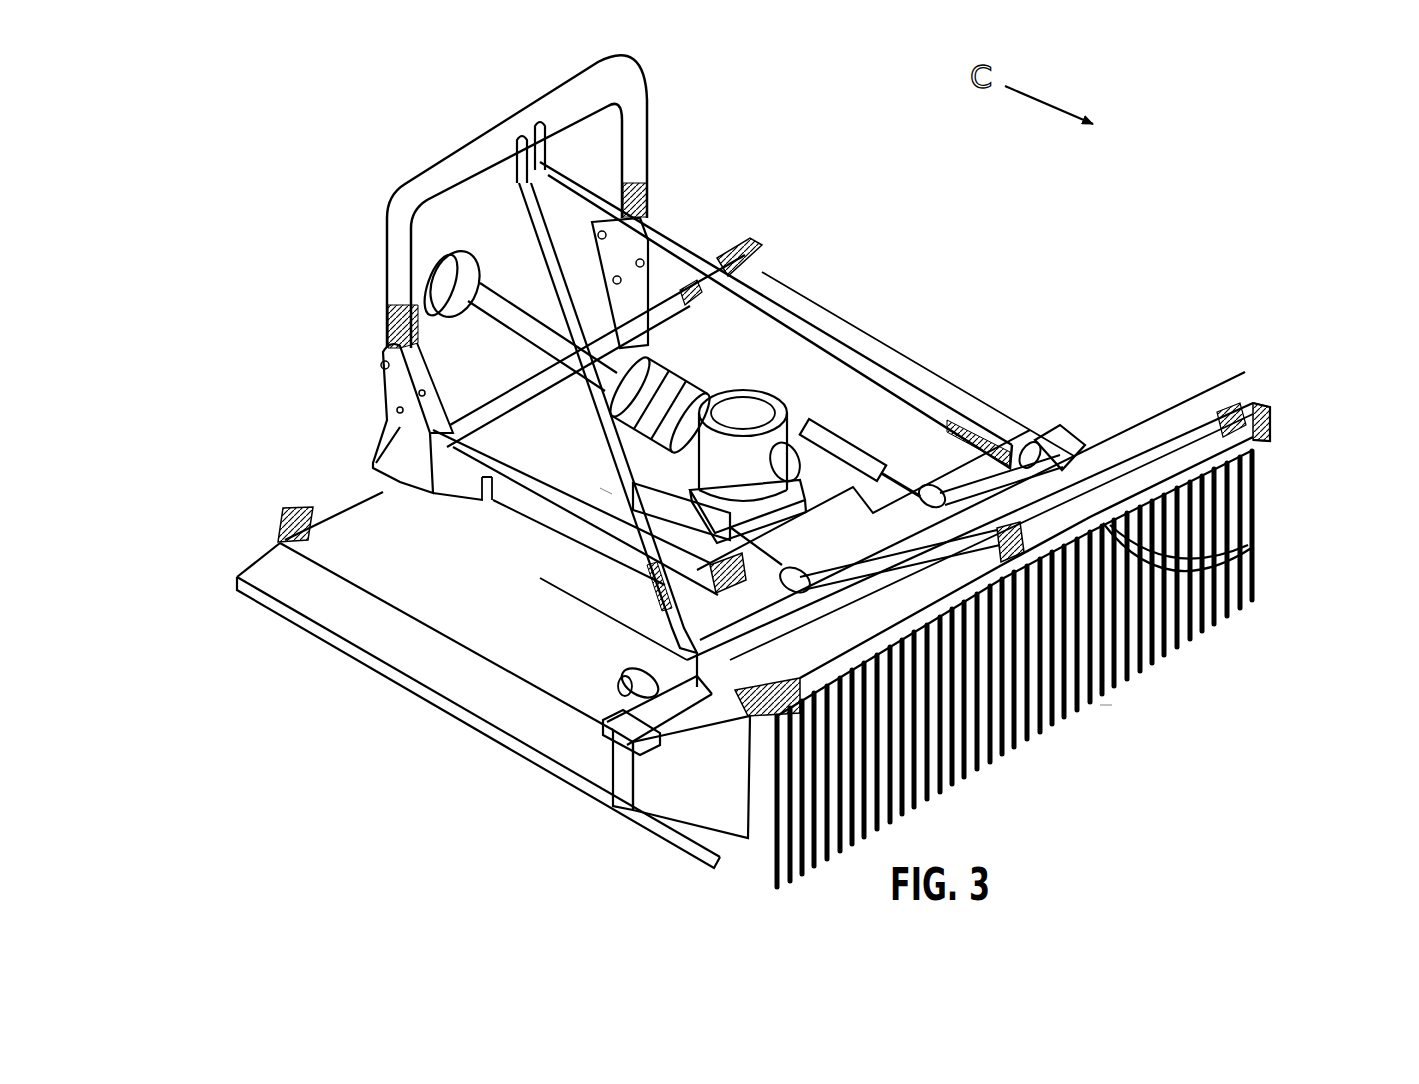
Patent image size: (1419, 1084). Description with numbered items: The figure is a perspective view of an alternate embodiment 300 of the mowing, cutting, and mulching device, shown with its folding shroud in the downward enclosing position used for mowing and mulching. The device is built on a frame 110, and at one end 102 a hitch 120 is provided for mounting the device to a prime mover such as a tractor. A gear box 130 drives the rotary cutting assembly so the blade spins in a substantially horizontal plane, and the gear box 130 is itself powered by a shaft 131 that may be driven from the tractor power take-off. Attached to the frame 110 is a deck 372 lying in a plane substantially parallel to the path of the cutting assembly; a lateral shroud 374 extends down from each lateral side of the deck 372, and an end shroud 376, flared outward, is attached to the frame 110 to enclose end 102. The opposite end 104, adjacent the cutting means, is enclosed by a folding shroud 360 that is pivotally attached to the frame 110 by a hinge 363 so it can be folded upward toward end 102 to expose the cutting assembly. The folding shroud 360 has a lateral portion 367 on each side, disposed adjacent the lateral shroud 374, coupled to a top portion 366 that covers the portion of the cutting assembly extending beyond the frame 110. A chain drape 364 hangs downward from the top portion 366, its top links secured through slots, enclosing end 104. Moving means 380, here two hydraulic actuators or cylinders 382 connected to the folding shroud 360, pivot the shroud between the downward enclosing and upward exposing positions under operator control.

The alternate embodiment of the mowing, cutting, and mulching device 300 is at (556, 834).
The end 102 is at (382, 424).
The end 104 is at (1107, 712).
The frame 110 is at (577, 535).
The hitch 120 is at (636, 162).
The gear box 130 is at (780, 384).
The shaft 131 is at (507, 305).
The folding shroud 360 is at (1253, 407).
The hinge 363 is at (1067, 437).
The chain drape 364 is at (1260, 578).
The top portion 366 is at (1113, 443).
The lateral portion 367 is at (717, 820).
The deck 372 is at (448, 570).
The lateral shroud 374 is at (423, 648).
The end shroud 376 is at (266, 562).
The moving means 380 is at (604, 491).
The hydraulic actuator or cylinder 382 is at (833, 430).